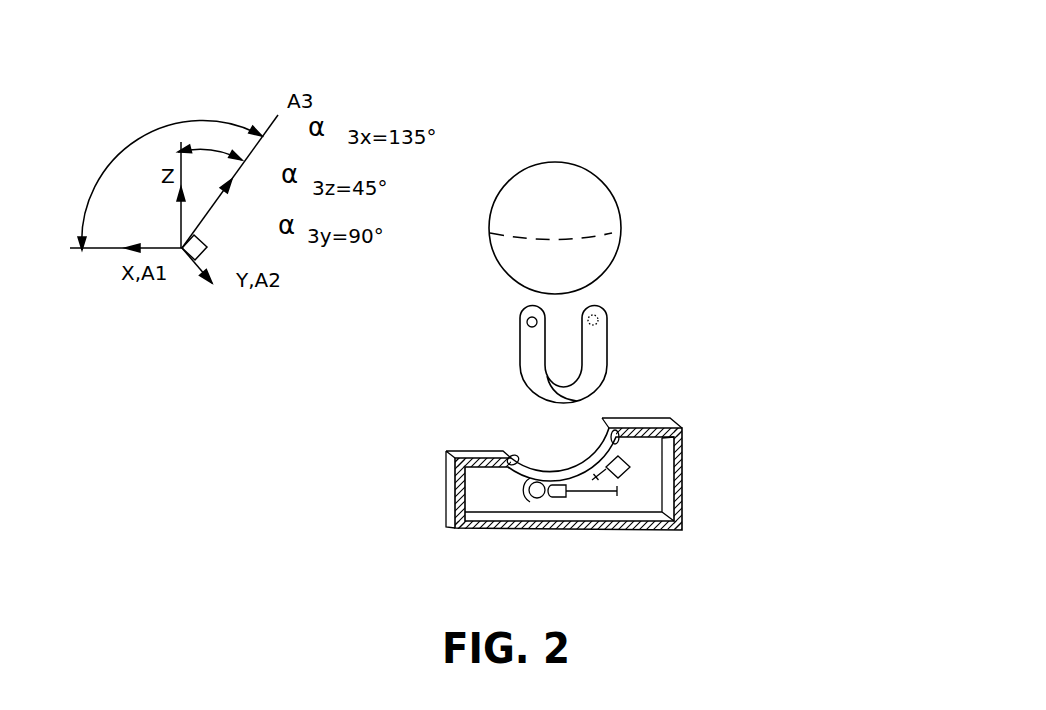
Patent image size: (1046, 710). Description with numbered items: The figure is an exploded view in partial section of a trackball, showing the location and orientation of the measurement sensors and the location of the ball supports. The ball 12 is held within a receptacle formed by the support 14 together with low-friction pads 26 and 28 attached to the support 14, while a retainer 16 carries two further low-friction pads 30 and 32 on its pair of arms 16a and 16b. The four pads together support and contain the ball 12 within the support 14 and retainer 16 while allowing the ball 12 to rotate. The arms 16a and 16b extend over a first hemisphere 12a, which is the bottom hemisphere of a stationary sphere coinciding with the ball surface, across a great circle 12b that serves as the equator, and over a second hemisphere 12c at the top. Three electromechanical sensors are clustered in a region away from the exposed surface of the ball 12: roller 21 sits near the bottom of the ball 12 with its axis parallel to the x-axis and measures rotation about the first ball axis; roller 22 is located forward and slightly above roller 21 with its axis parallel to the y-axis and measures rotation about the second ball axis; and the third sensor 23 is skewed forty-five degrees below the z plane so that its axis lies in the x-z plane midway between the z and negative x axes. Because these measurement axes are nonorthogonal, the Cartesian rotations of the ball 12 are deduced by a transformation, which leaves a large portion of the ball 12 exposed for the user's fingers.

The ball 12 is at (494, 200).
The first hemisphere 12a is at (604, 250).
The great circle 12b is at (598, 235).
The second hemisphere 12c is at (580, 197).
The support 14 is at (467, 491).
The retainer 16 is at (640, 335).
The arm of retainer 16a is at (596, 352).
The arm of retainer 16b is at (533, 368).
The roller 21 is at (563, 497).
The roller 22 is at (530, 496).
The sensor 23 is at (629, 469).
The low-friction pad 26 is at (508, 456).
The low-friction pad 28 is at (610, 437).
The low-friction pad 30 is at (527, 325).
The low-friction pad 32 is at (597, 317).